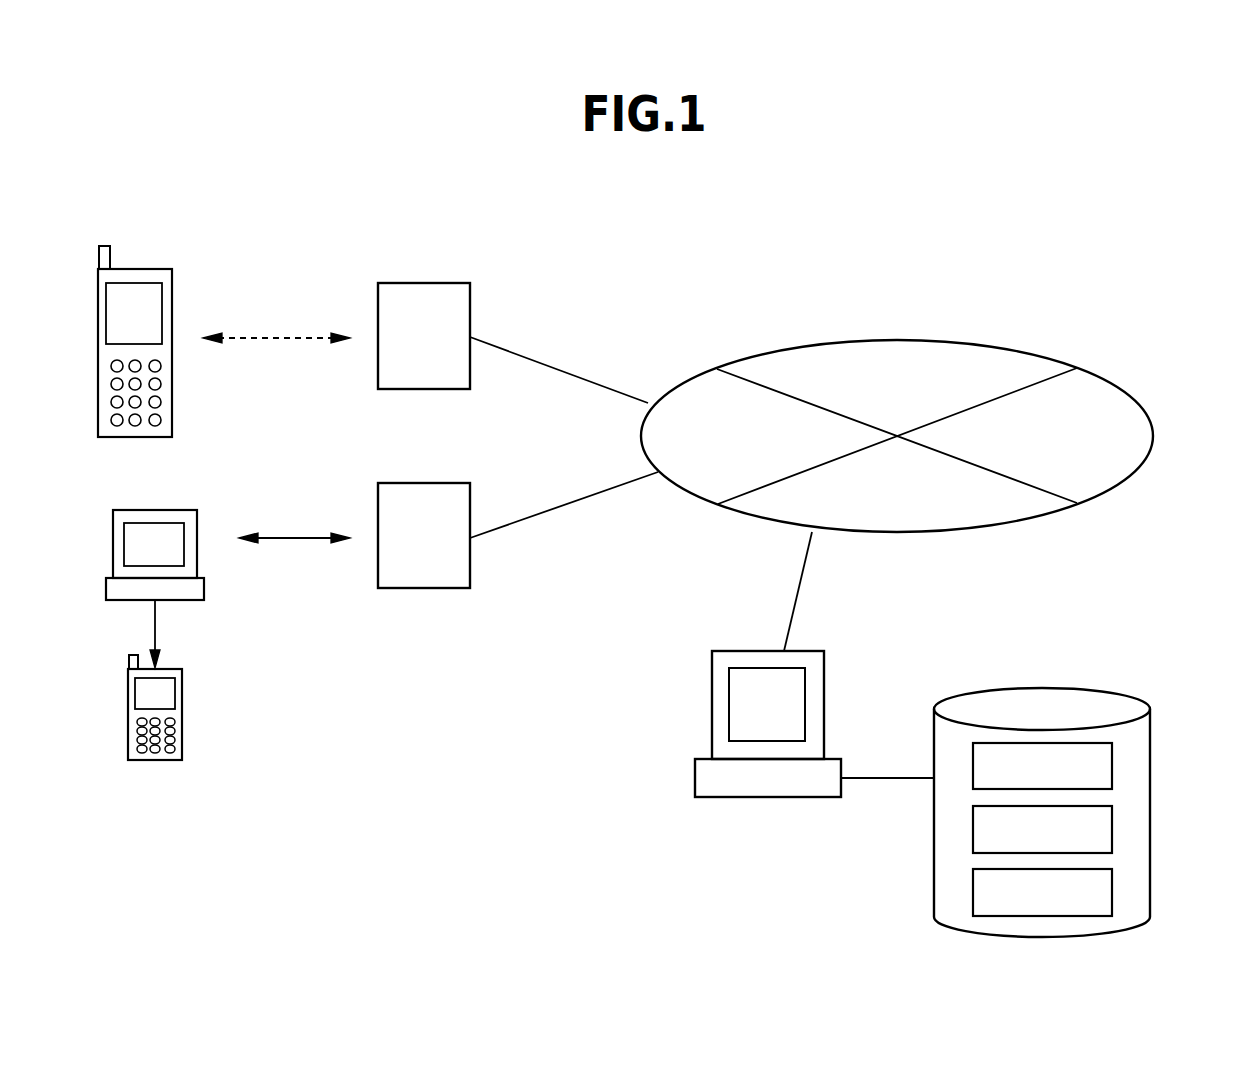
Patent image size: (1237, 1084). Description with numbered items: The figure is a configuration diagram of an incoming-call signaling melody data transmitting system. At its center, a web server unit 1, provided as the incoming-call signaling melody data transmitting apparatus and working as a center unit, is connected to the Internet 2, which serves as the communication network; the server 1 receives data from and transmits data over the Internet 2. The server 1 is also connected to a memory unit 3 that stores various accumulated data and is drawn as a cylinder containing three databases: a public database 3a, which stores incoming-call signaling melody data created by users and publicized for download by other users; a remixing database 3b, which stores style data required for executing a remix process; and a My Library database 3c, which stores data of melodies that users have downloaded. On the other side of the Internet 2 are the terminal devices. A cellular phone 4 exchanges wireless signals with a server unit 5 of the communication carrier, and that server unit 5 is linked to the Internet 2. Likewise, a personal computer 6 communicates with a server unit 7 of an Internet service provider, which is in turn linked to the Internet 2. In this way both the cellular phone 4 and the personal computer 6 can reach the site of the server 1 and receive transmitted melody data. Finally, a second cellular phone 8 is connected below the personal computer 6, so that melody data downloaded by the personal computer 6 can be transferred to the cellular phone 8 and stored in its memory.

The web server unit 1 is at (825, 668).
The Internet 2 is at (1002, 348).
The memory unit 3 is at (1075, 794).
The public database 3a is at (1112, 762).
The remixing database 3b is at (1112, 824).
The My Library database 3c is at (1112, 887).
The cellular phone 4 is at (173, 281).
The server unit 5 is at (450, 282).
The personal computer 6 is at (170, 509).
The server unit 7 is at (450, 483).
The cellular phone 8 is at (183, 690).